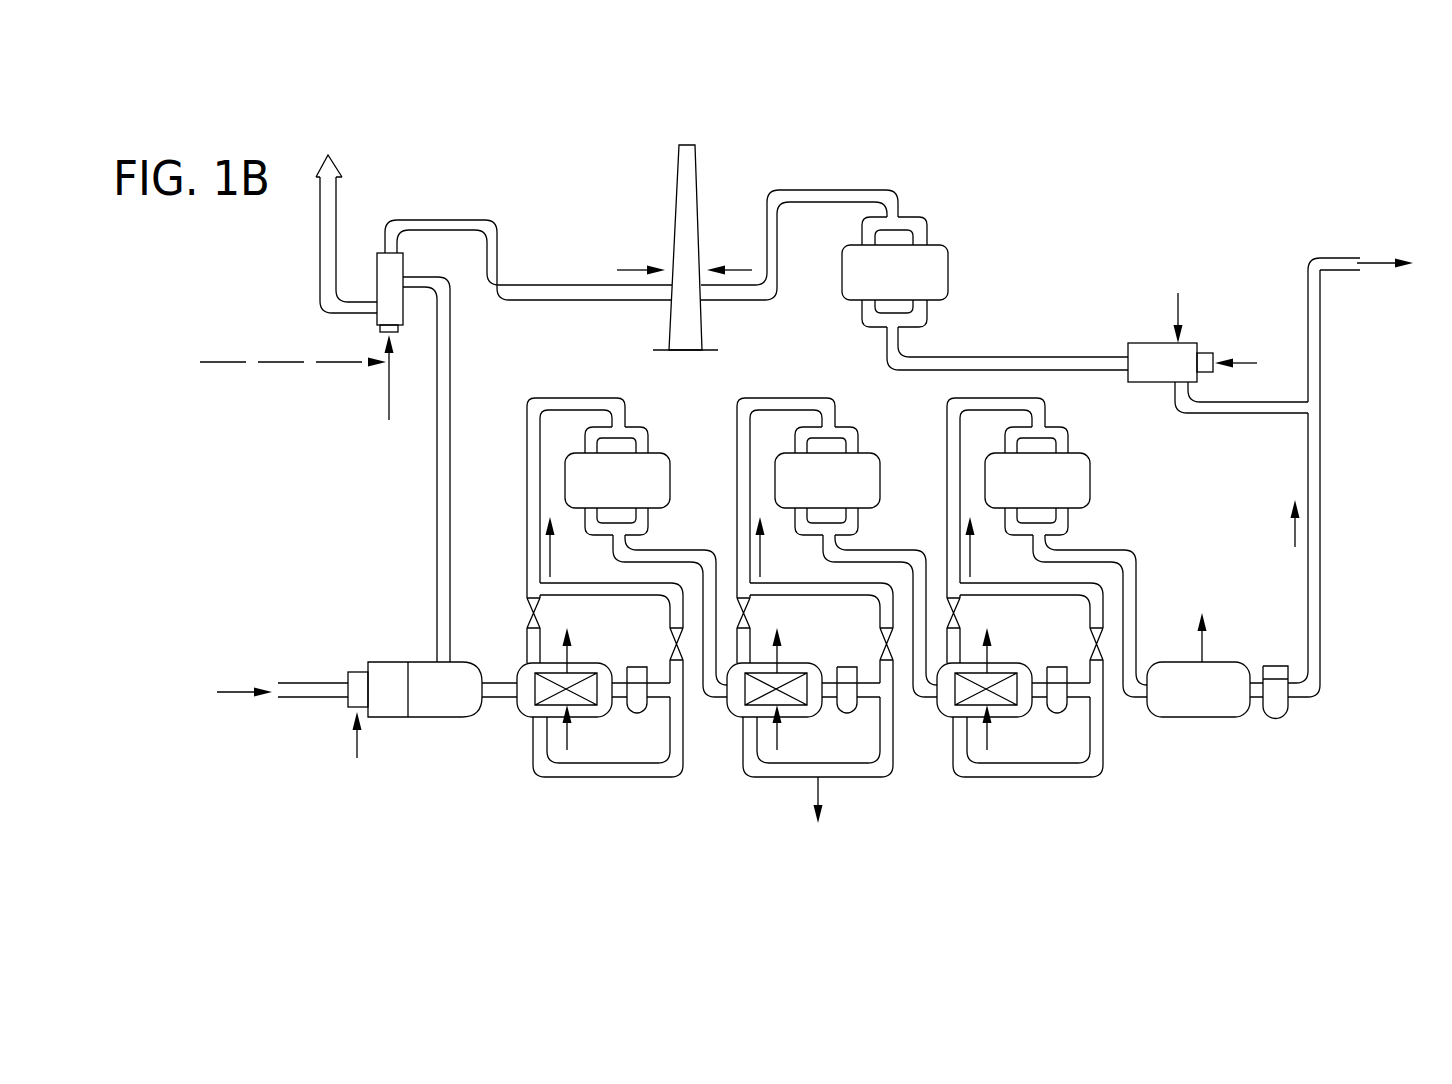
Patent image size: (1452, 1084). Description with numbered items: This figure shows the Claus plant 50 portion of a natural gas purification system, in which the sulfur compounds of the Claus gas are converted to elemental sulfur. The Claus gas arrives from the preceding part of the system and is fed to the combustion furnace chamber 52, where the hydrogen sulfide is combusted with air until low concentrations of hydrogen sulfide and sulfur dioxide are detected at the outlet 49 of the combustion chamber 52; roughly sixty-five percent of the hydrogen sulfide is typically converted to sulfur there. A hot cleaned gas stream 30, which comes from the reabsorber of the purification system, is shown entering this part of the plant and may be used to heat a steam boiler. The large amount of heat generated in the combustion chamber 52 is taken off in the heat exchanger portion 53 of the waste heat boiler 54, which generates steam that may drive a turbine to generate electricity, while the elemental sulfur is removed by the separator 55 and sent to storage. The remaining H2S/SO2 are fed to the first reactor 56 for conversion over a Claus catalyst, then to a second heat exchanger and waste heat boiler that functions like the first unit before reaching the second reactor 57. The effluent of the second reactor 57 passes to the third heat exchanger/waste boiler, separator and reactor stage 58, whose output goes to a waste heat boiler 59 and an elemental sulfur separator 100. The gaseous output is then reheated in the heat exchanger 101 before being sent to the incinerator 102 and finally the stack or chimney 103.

The hot cleaned gas stream 30 is at (386, 386).
The outlet of the combustion chamber 49 is at (503, 680).
The Claus plant 50 is at (742, 163).
The combustion furnace chamber 52 is at (453, 718).
The heat exchanger portion 53 is at (578, 672).
The waste heat boiler 54 is at (583, 718).
The separator 55 is at (645, 718).
The first reactor 56 is at (657, 453).
The second reactor 57 is at (867, 447).
The third heat exchanger/waste boiler, separator and reactor stage 58 is at (1114, 463).
The waste heat boiler 59 is at (1158, 717).
The elemental sulfur separator 100 is at (1272, 720).
The heat exchanger 101 is at (1142, 343).
The incinerator 102 is at (937, 242).
The stack or chimney 103 is at (677, 192).